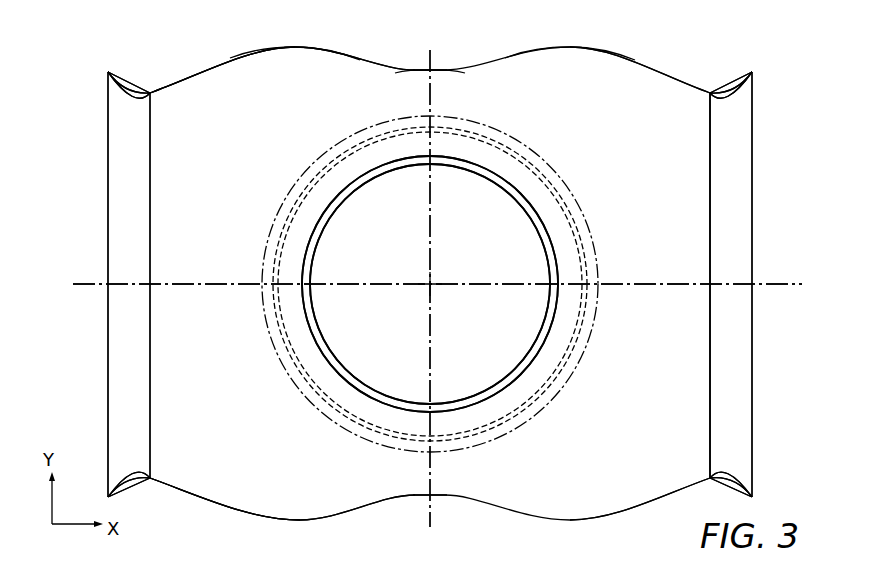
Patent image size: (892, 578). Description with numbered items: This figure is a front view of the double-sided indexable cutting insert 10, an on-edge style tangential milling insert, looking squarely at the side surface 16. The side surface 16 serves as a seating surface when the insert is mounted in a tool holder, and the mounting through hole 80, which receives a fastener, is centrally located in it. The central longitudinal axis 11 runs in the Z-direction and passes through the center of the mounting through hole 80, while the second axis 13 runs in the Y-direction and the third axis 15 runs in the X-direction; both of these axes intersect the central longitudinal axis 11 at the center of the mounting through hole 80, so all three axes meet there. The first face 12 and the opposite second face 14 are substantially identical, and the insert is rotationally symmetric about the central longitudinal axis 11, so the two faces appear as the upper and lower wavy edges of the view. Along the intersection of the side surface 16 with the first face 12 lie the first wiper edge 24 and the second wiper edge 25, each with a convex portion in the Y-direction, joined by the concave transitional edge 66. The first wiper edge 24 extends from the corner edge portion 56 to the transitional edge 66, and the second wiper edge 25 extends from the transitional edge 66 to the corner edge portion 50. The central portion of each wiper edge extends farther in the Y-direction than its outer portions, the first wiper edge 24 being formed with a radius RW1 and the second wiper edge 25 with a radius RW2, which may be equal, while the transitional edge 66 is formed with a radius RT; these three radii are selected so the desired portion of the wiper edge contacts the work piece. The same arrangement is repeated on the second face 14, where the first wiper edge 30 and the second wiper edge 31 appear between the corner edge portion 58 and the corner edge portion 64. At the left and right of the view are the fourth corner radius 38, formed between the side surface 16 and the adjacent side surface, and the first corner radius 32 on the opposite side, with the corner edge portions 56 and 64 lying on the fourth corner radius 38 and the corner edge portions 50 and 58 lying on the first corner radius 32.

The cutting insert 10 is at (96, 46).
The central longitudinal axis 11 is at (433, 284).
The first face 12 is at (309, 42).
The second axis 13 is at (432, 512).
The second face 14 is at (314, 528).
The third axis 15 is at (768, 283).
The side surface 16 is at (703, 198).
The first wiper edge 24 is at (243, 58).
The second wiper edge 25 is at (604, 57).
The first wiper edge 30 is at (590, 515).
The second wiper edge 31 is at (218, 512).
The first corner radius 32 is at (738, 347).
The fourth corner radius 38 is at (125, 328).
The corner edge portion 50 is at (748, 78).
The corner edge portion 56 is at (118, 95).
The corner edge portion 58 is at (740, 480).
The corner edge portion 64 is at (132, 474).
The transitional edge 66 is at (445, 72).
The mounting through hole 80 is at (550, 257).
The transitional edge radius RT is at (443, 62).
The first wiper edge radius RW1 is at (272, 61).
The second wiper edge radius RW2 is at (565, 60).